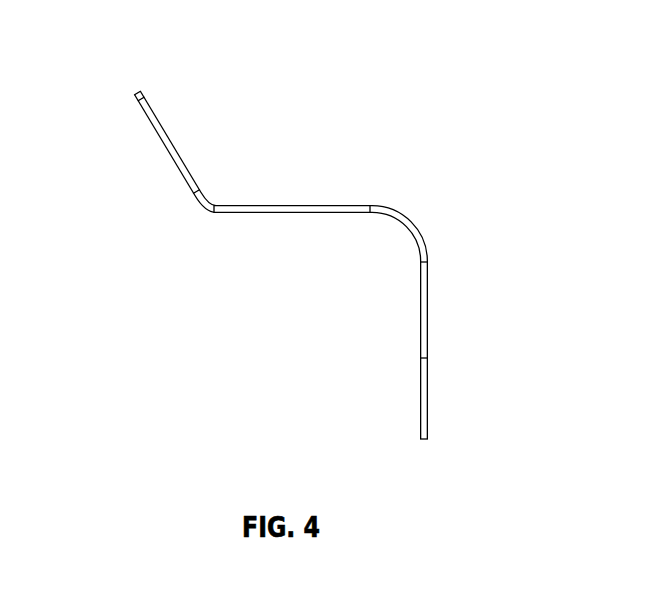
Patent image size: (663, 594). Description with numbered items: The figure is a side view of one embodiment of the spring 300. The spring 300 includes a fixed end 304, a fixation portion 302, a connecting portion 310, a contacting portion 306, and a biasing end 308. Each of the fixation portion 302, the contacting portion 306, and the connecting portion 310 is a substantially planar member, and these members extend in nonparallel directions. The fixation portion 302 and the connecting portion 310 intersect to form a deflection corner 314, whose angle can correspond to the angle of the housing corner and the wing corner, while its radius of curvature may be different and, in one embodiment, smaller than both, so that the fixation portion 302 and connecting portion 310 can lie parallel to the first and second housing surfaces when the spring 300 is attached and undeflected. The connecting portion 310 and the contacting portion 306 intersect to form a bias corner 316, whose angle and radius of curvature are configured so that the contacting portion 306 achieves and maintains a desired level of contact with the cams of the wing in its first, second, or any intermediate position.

The spring 300 is at (322, 269).
The fixation portion 302 is at (420, 386).
The fixed end 304 is at (423, 441).
The contacting portion 306 is at (160, 147).
The biasing end 308 is at (137, 92).
The connecting portion 310 is at (290, 214).
The deflection corner 314 is at (405, 218).
The bias corner 316 is at (200, 208).